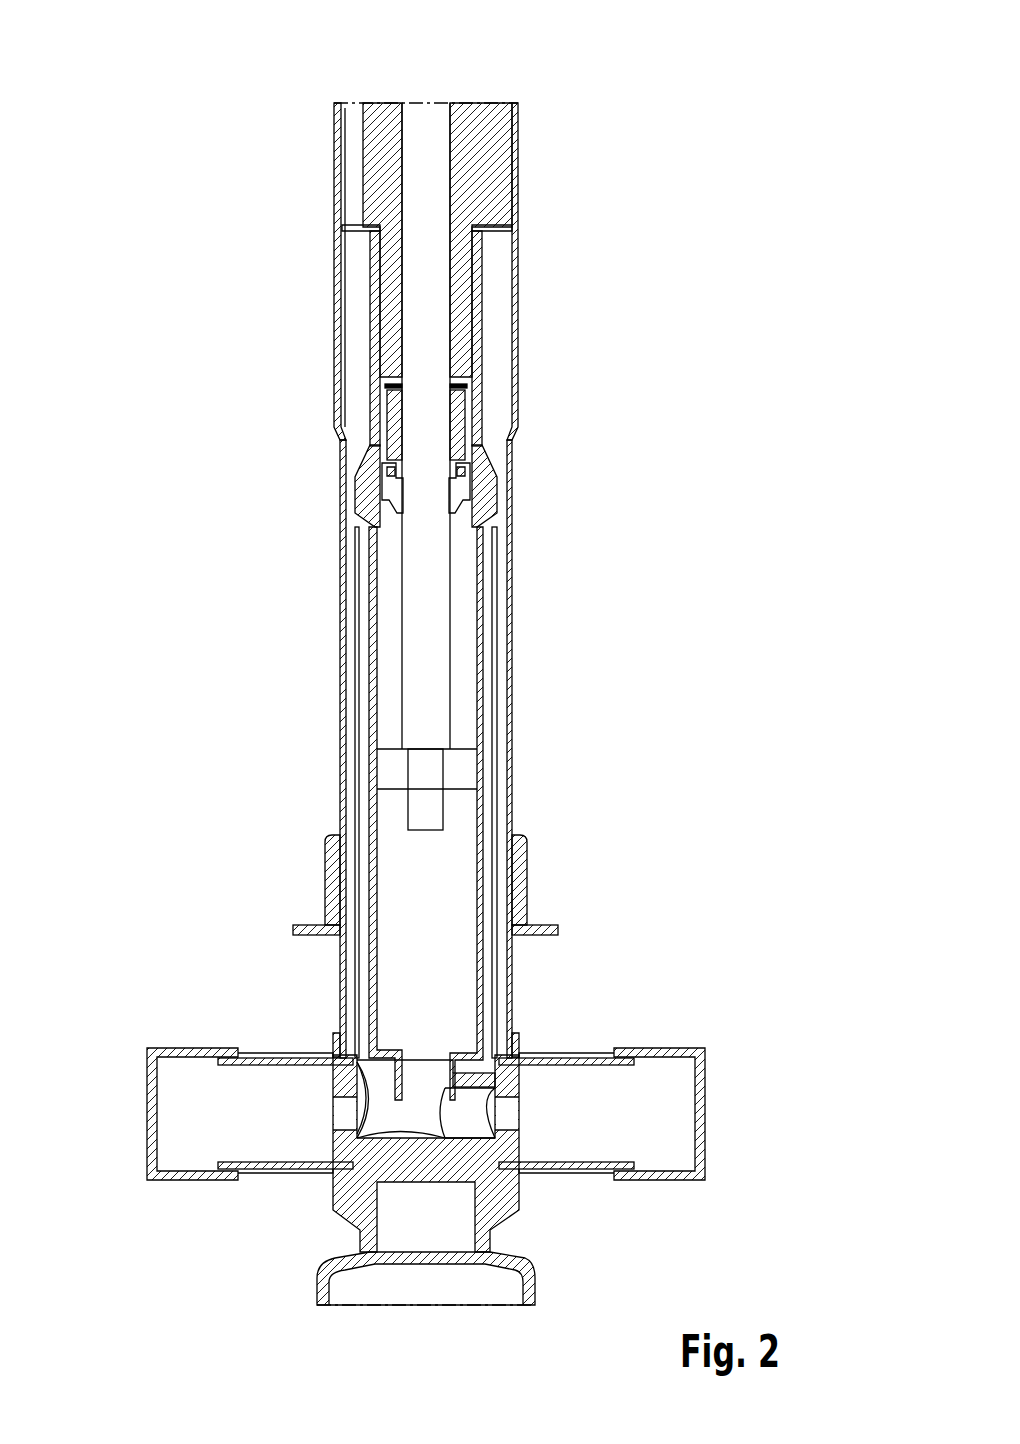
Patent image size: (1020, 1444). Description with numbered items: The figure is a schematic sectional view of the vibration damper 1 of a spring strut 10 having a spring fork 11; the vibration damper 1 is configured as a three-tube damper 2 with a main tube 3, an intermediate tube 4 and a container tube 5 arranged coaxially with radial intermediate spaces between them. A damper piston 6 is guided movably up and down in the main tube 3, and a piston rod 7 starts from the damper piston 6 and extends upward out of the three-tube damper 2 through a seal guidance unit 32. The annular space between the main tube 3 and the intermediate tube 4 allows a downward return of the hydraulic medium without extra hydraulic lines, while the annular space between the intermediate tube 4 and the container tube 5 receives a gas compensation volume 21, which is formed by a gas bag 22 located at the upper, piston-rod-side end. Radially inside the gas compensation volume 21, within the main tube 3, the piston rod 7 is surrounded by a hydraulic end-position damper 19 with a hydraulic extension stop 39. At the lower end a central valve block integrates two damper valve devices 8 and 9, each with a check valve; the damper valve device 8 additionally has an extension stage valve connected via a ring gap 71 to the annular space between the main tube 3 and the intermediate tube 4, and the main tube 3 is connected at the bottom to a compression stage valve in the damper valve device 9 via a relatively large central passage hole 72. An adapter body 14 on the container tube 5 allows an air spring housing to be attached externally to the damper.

The vibration damper 1 is at (560, 88).
The three-tube damper 2 is at (530, 688).
The main tube 3 is at (485, 830).
The intermediate tube 4 is at (498, 875).
The container tube 5 is at (510, 962).
The damper piston 6 is at (478, 772).
The piston rod 7 is at (430, 120).
The damper valve device 8 is at (150, 1028).
The damper valve device 9 is at (705, 1028).
The spring strut 10 is at (262, 1278).
The spring fork 11 is at (533, 1297).
The adapter body 14 is at (328, 832).
The hydraulic end-position damper 19 is at (465, 300).
The gas compensation volume 21 is at (360, 283).
The gas bag 22 is at (348, 355).
The seal guidance unit 32 is at (492, 195).
The hydraulic extension stop 39 is at (463, 392).
The ring gap 71 is at (360, 1050).
The central passage hole 72 is at (420, 1058).